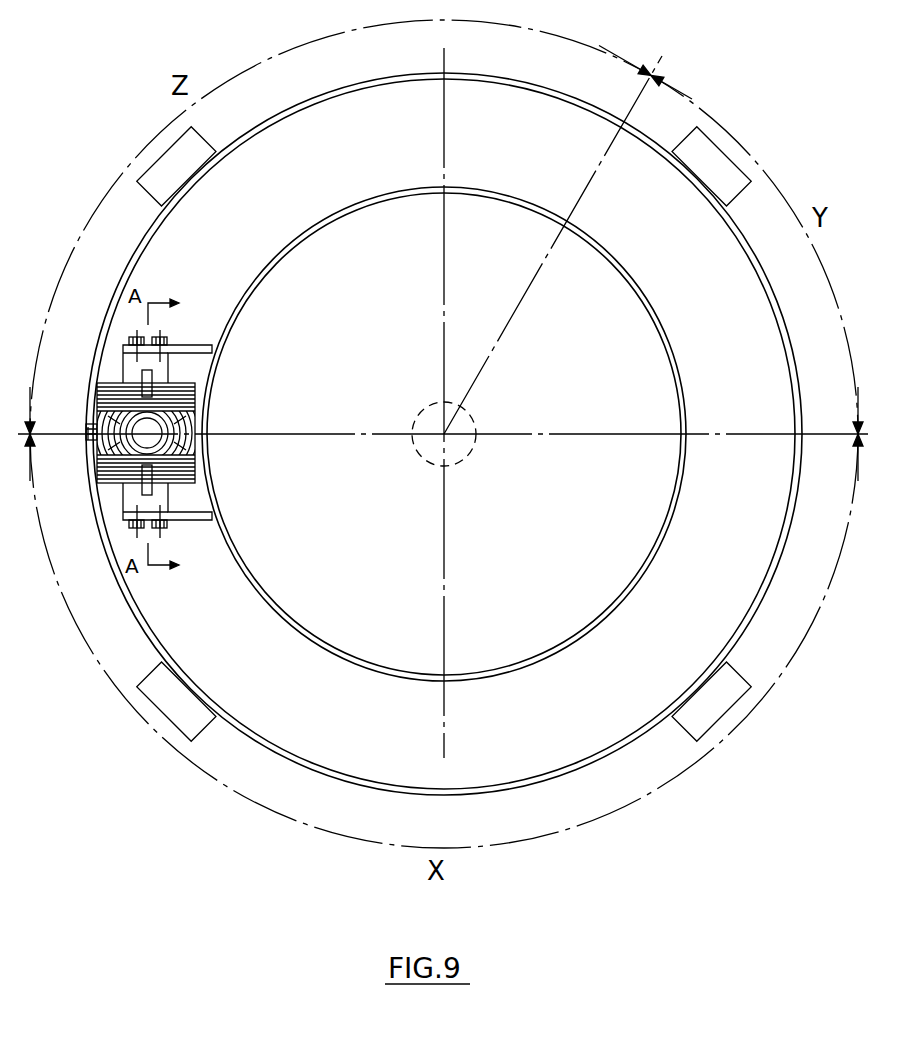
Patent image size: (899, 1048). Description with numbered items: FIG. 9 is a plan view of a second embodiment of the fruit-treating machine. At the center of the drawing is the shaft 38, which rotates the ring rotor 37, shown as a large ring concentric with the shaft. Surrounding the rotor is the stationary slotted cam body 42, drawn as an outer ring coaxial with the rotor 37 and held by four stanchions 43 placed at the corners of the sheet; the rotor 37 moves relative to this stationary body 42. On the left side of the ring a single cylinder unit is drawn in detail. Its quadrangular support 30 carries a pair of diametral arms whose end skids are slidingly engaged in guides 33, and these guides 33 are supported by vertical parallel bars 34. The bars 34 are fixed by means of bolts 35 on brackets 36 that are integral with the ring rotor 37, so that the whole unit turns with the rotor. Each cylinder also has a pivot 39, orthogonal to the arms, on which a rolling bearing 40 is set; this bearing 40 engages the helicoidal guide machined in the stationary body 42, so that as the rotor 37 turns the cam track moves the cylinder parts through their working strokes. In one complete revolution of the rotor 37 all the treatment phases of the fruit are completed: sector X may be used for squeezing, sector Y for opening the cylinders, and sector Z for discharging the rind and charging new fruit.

The quadrangular support 30 is at (185, 387).
The guides 33 is at (153, 480).
The vertical parallel bars 34 is at (157, 500).
The bolts 35 is at (137, 530).
The brackets 36 is at (192, 348).
The rotor 37 is at (292, 625).
The shaft 38 is at (473, 450).
The pivot 39 is at (92, 428).
The rolling bearing 40 is at (88, 435).
The stationary body 42 is at (140, 244).
The stanchions 43 is at (158, 188).